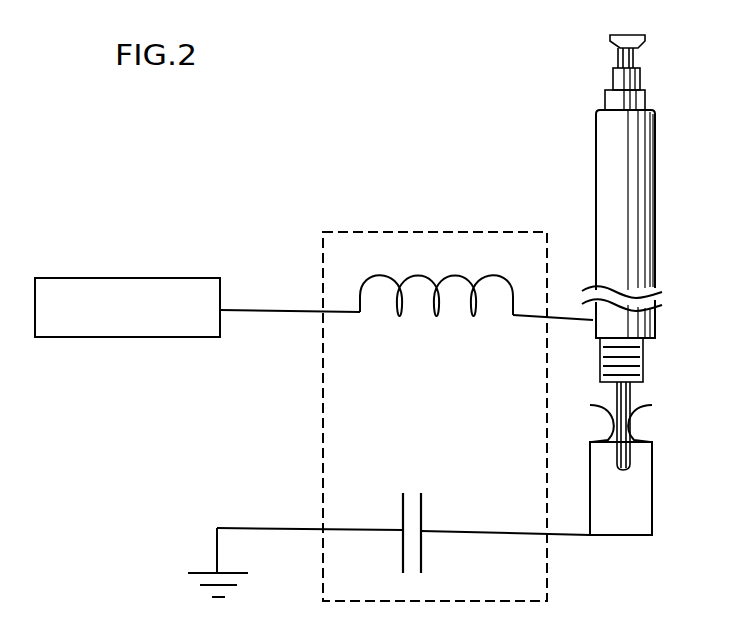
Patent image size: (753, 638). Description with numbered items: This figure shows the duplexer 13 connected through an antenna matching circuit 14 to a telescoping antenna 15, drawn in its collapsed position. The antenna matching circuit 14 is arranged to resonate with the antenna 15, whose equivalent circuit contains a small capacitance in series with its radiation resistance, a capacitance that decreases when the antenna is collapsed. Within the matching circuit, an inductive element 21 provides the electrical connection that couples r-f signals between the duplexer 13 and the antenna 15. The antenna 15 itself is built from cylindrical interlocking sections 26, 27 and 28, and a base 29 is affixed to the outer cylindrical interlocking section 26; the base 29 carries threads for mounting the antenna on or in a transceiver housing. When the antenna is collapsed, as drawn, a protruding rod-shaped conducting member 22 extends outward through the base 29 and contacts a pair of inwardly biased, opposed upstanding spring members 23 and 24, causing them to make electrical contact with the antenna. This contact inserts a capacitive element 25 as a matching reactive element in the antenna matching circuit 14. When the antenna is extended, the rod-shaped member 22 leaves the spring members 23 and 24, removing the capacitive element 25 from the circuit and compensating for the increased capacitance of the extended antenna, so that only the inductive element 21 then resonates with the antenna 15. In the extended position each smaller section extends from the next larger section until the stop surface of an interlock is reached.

The duplexer 13 is at (115, 278).
The antenna matching circuit 14 is at (354, 232).
The antenna 15 is at (710, 137).
The inductive element 21 is at (436, 333).
The rod-shaped conducting member 22 is at (630, 393).
The spring member 23 is at (652, 487).
The spring member 24 is at (590, 487).
The capacitive element 25 is at (421, 503).
The outer cylindrical interlocking section 26 is at (652, 257).
The cylindrical interlocking section 27 is at (645, 110).
The cylindrical interlocking section 28 is at (640, 86).
The base 29 is at (643, 357).